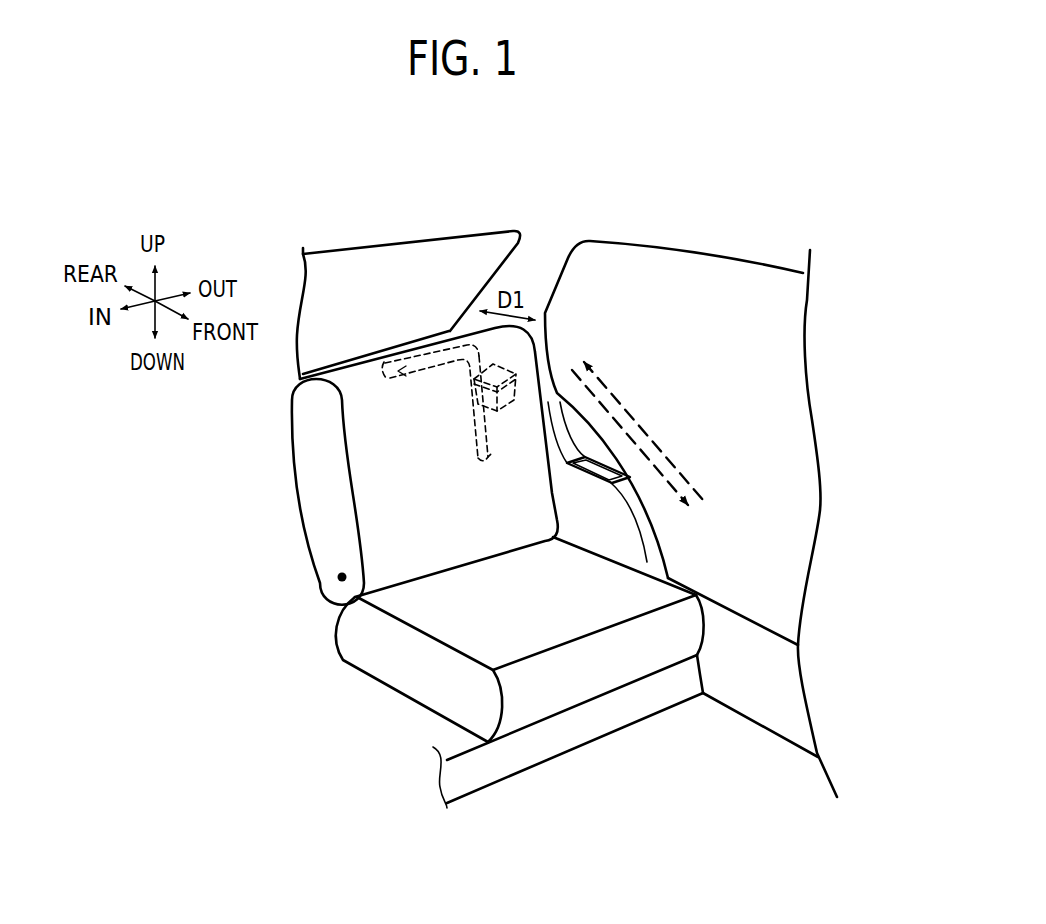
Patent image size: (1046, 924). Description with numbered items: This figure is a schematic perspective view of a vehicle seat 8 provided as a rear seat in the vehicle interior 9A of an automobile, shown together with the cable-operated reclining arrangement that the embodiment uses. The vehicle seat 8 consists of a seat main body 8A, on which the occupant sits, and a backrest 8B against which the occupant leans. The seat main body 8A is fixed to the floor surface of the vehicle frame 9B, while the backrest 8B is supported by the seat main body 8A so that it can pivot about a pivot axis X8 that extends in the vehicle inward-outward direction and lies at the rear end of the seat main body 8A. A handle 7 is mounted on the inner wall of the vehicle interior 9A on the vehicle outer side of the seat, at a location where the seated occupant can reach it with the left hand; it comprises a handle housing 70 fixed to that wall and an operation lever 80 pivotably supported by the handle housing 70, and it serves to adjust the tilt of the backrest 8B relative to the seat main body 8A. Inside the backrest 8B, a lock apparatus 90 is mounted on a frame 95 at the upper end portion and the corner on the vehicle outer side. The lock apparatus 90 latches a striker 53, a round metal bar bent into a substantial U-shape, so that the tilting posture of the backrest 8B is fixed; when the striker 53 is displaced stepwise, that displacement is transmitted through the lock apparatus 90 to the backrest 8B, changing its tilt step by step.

The handle 7 is at (660, 497).
The vehicle seat 8 is at (455, 557).
The seat main body 8A is at (445, 682).
The backrest 8B is at (318, 482).
The pivot axis X8 is at (338, 578).
The vehicle interior 9A is at (661, 299).
The vehicle frame 9B is at (712, 755).
The striker 53 is at (468, 385).
The handle housing 70 is at (632, 488).
The operation lever 80 is at (589, 486).
The lock apparatus 90 is at (507, 418).
The frame 95 is at (417, 375).